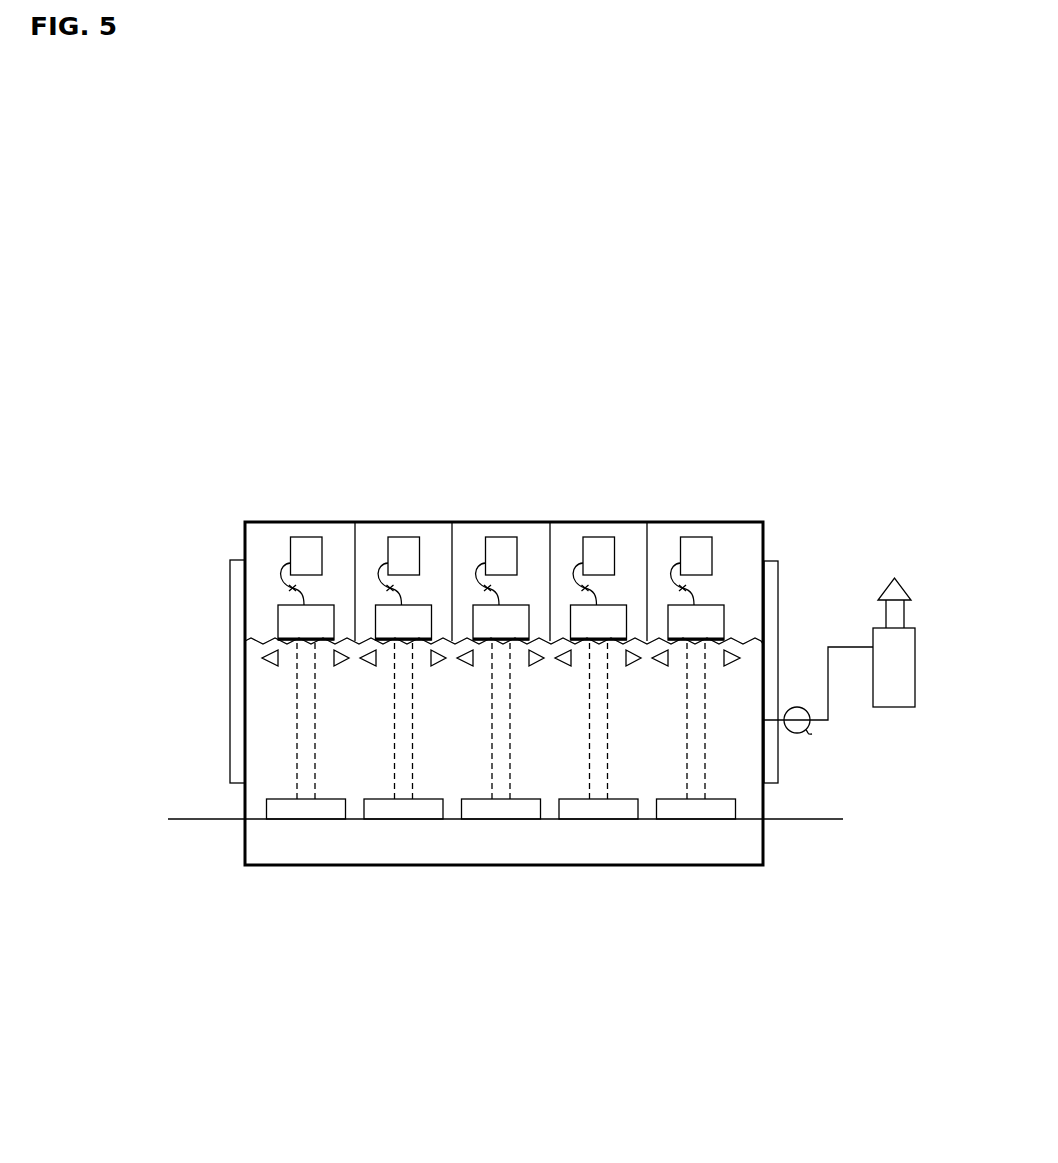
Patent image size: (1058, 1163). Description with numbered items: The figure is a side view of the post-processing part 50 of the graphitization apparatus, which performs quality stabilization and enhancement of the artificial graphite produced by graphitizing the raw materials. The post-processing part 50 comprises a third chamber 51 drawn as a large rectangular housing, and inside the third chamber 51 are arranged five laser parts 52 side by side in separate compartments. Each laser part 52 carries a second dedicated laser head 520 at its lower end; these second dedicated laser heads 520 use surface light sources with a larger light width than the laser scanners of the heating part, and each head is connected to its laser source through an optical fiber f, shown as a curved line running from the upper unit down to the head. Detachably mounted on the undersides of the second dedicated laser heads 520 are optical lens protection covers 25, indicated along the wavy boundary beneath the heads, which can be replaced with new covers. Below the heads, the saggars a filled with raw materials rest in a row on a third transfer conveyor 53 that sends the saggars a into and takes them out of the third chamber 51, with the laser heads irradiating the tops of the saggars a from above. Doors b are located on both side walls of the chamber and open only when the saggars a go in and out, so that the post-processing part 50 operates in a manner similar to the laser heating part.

The post-processing part 50 is at (172, 238).
The third chamber 51 is at (305, 510).
The laser part 52 is at (472, 512).
The second dedicated laser head 520 is at (713, 605).
The optical lens protection cover 25 is at (422, 645).
The third transfer conveyor 53 is at (800, 834).
The optical fiber f is at (280, 564).
The saggar a is at (568, 799).
The door b is at (230, 627).